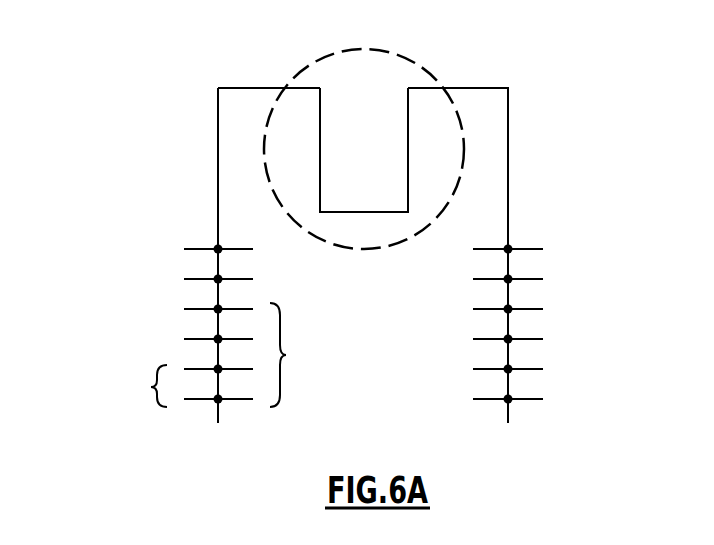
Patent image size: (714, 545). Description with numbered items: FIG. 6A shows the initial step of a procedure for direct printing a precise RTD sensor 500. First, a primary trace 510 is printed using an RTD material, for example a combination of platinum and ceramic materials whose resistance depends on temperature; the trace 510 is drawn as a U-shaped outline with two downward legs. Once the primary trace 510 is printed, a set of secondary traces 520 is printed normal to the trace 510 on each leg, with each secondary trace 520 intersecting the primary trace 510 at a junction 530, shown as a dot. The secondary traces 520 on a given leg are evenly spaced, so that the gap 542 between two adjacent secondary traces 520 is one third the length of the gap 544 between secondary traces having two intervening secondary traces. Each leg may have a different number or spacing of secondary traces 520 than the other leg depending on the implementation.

The RTD sensor 500 is at (138, 55).
The primary trace 510 is at (262, 88).
The secondary traces 520 is at (193, 248).
The junction 530 is at (219, 249).
The gap between two adjacent secondary traces 542 is at (151, 387).
The gap between secondary traces having two intervening secondary traces 544 is at (286, 355).